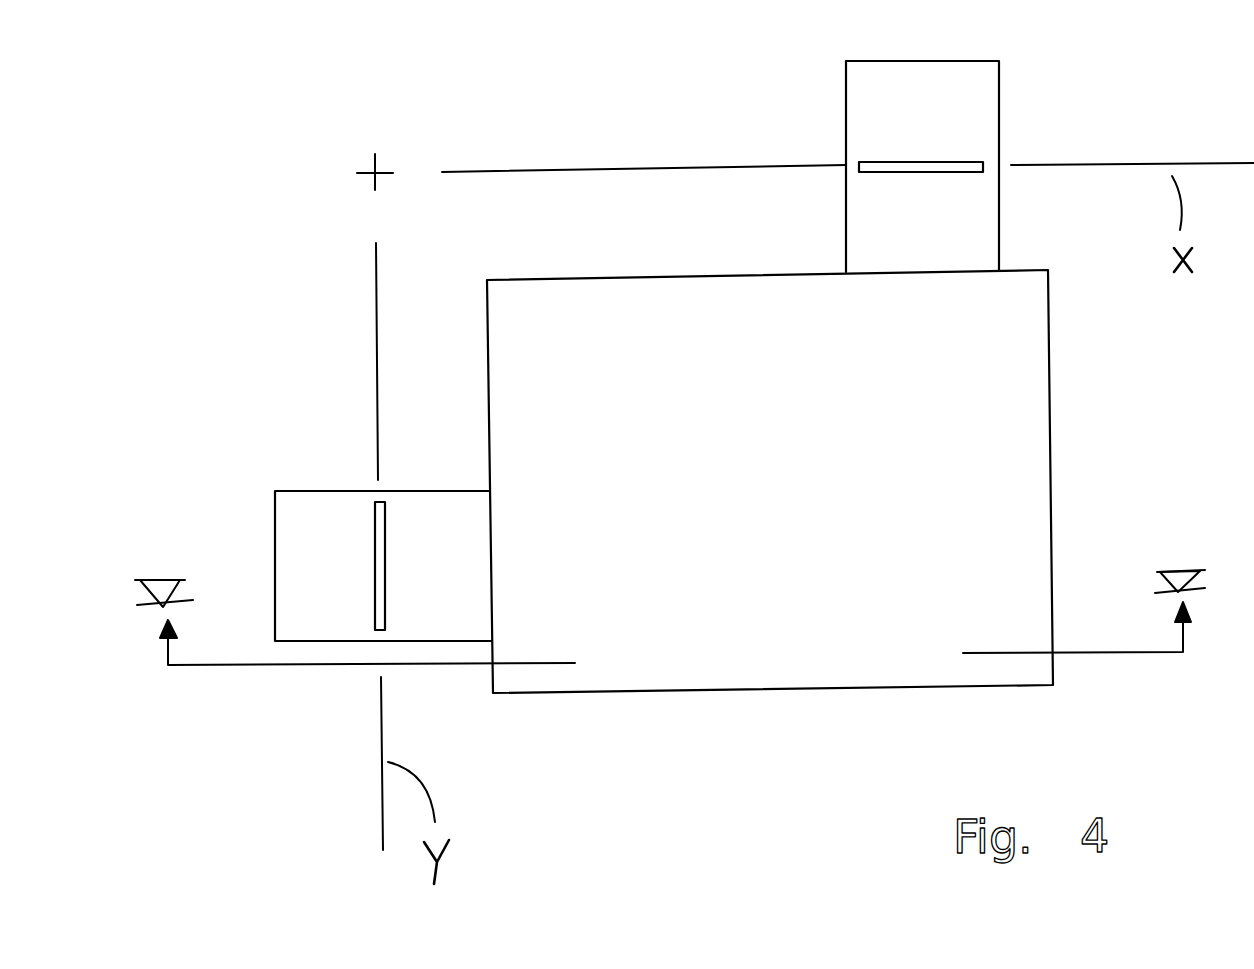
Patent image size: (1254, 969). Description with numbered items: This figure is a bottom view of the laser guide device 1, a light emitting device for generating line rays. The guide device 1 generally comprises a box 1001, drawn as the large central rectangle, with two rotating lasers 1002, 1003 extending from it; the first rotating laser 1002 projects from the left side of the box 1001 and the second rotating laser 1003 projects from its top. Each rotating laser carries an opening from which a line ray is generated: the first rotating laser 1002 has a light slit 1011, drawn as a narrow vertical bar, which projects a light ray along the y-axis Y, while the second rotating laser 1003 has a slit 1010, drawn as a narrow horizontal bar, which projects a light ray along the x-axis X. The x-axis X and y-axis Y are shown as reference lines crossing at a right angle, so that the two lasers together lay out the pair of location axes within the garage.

The guide device 1 is at (1097, 458).
The box 1001 is at (770, 660).
The first rotating laser 1002 is at (288, 527).
The second rotating laser 1003 is at (987, 77).
The slit 1010 is at (972, 158).
The light slit 1011 is at (375, 502).